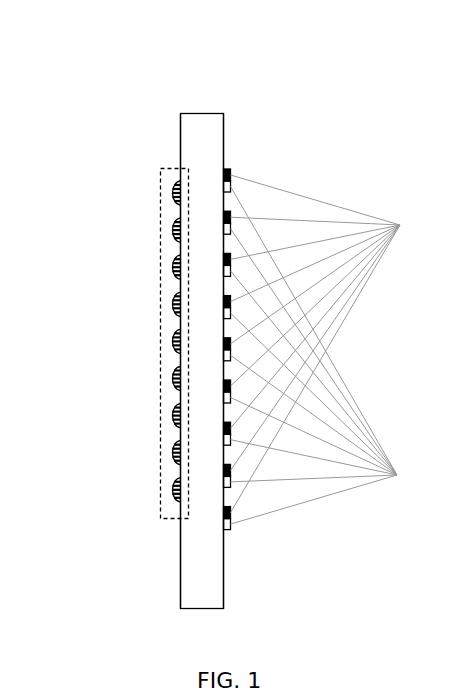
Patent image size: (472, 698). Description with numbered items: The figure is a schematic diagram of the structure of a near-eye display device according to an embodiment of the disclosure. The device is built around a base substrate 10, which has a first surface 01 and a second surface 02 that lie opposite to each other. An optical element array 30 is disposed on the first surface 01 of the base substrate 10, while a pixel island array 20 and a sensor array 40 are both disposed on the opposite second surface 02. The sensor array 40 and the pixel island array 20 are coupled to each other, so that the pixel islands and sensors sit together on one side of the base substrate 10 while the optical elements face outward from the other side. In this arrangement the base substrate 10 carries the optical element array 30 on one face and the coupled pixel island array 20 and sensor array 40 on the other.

The base substrate 10 is at (198, 125).
The pixel island array 20 is at (334, 344).
The optical element array 30 is at (160, 330).
The sensor array 40 is at (332, 355).
The first surface 01 is at (180, 571).
The second surface 02 is at (224, 565).